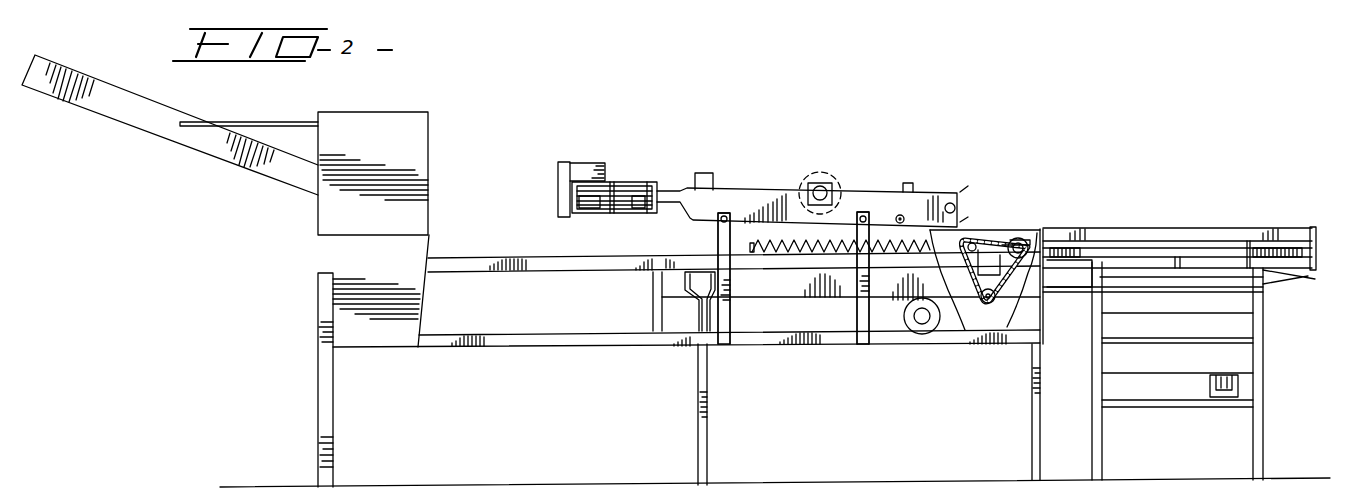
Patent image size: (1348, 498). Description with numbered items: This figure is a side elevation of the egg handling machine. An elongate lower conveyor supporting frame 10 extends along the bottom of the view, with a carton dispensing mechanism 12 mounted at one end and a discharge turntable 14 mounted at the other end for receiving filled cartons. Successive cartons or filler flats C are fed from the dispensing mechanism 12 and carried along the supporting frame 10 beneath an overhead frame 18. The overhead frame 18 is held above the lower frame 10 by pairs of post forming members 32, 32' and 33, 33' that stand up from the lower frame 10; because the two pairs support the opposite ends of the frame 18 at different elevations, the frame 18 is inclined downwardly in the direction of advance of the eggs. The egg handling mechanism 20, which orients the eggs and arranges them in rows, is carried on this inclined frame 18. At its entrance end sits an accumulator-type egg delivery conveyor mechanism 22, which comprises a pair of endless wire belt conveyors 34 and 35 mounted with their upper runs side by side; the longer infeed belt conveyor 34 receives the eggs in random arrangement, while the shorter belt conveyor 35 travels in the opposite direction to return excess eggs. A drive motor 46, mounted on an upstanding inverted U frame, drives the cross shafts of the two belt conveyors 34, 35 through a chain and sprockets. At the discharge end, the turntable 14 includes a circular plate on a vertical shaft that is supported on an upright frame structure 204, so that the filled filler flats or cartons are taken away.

The lower conveyor supporting frame 10 is at (556, 351).
The carton dispensing mechanism 12 is at (438, 141).
The discharge turntable 14 is at (1187, 226).
The overhead frame 18 is at (768, 189).
The egg handling mechanism 20 is at (830, 165).
The accumulator-type egg delivery conveyor mechanism 22 is at (645, 178).
The post forming member 32 is at (706, 278).
The post forming member 32' is at (691, 278).
The post forming member 33 is at (845, 292).
The post forming member 33' is at (869, 292).
The infeed belt conveyor 34 is at (638, 205).
The belt conveyor 35 is at (583, 202).
The drive motor 46 is at (583, 170).
The cartons or filler flats C is at (758, 252).
The upright frame structure 204 is at (1260, 387).